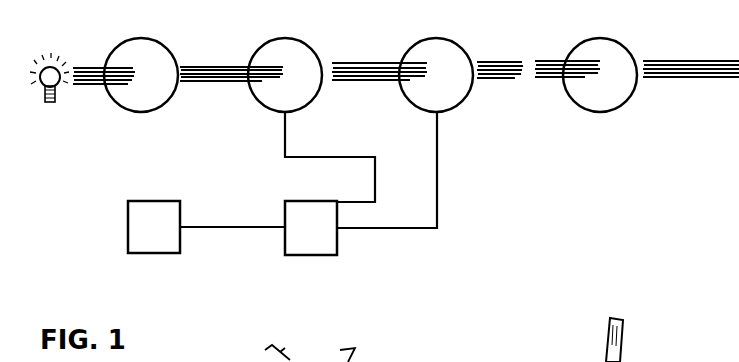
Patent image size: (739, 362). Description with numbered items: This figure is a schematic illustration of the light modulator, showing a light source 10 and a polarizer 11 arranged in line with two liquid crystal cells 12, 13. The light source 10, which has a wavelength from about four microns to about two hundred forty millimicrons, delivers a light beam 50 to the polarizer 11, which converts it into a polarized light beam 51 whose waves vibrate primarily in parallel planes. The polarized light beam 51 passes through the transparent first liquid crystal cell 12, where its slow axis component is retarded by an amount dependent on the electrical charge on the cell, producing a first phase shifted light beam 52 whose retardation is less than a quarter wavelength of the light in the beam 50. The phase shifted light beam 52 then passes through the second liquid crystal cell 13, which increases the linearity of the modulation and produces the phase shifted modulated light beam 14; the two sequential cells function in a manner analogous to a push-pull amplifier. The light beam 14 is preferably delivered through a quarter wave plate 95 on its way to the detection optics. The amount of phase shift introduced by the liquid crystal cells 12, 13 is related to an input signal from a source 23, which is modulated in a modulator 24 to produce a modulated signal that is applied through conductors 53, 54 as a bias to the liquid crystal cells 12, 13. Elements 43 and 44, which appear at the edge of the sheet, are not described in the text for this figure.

The light source 10 is at (55, 95).
The polarizer 11 is at (148, 37).
The liquid crystal cell 12 is at (298, 37).
The second liquid crystal cell 13 is at (440, 37).
The phase shifted modulated light beam 14 is at (505, 64).
The source 23 is at (155, 253).
The modulator 24 is at (312, 255).
The element 43 is at (608, 354).
The element 44 is at (622, 358).
The light beam 50 is at (96, 70).
The polarized light beam 51 is at (225, 72).
The first phase shifted light beam 52 is at (380, 62).
The conductor 53 is at (288, 142).
The conductor 54 is at (440, 138).
The quarter wave plate 95 is at (623, 25).